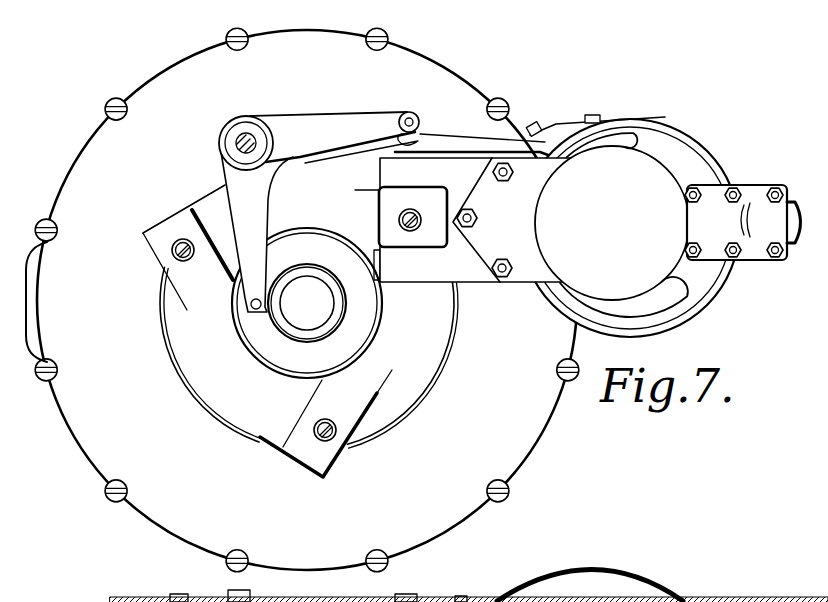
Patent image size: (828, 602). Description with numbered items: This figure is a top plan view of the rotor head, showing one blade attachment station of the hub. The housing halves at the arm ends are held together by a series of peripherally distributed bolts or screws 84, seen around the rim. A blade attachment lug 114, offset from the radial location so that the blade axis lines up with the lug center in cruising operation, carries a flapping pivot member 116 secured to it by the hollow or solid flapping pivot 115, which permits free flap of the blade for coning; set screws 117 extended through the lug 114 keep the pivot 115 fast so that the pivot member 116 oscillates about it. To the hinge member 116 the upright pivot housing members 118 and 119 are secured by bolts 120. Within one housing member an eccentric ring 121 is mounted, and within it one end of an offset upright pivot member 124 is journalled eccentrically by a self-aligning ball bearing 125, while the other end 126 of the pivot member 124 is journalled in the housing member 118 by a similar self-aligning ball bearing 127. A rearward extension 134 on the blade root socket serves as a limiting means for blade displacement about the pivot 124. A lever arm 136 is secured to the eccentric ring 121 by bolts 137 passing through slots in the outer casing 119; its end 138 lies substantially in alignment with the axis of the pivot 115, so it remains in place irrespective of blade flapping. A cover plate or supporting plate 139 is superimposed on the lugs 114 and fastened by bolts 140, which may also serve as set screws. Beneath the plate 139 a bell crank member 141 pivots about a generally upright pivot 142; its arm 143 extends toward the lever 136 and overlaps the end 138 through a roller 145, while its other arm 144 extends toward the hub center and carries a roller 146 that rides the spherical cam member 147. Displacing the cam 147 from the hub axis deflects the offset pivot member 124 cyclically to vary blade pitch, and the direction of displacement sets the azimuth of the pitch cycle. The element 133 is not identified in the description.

The bolts or screws 84 is at (568, 383).
The blade attachment lug 114 is at (170, 236).
The flapping pivot 115 is at (446, 601).
The flapping pivot member 116 is at (440, 152).
The set screw 117 is at (404, 216).
The upright pivot housing member 118 is at (648, 138).
The upright pivot housing member 119 is at (703, 149).
The bolts 120 is at (510, 268).
The eccentric ring 121 is at (641, 165).
The offset upright pivot member 124 is at (713, 588).
The self-aligning ball bearing 125 is at (693, 185).
The other end of offset pivot member 126 is at (633, 590).
The self-aligning ball bearing 127 is at (680, 590).
The member 133 is at (728, 596).
The rearward extension 134 is at (515, 601).
The lever arm 136 is at (490, 172).
The bolts 137 is at (590, 116).
The end of lever 138 is at (437, 167).
The cover plate or supporting plate 139 is at (118, 598).
The bolts 140 is at (186, 592).
The bell crank member 141 is at (284, 120).
The upright pivot 142 is at (243, 138).
The arm 143 is at (334, 145).
The arm 144 is at (255, 222).
The roller 145 is at (411, 113).
The roller 146 is at (235, 591).
The spherical cam member 147 is at (372, 592).